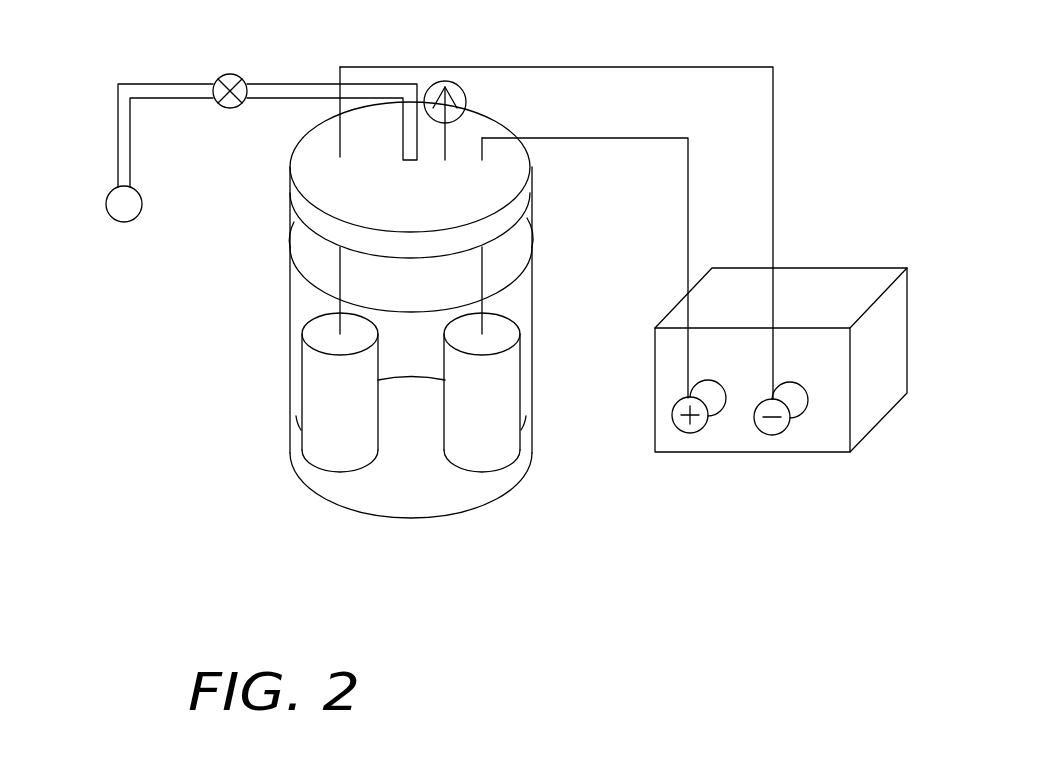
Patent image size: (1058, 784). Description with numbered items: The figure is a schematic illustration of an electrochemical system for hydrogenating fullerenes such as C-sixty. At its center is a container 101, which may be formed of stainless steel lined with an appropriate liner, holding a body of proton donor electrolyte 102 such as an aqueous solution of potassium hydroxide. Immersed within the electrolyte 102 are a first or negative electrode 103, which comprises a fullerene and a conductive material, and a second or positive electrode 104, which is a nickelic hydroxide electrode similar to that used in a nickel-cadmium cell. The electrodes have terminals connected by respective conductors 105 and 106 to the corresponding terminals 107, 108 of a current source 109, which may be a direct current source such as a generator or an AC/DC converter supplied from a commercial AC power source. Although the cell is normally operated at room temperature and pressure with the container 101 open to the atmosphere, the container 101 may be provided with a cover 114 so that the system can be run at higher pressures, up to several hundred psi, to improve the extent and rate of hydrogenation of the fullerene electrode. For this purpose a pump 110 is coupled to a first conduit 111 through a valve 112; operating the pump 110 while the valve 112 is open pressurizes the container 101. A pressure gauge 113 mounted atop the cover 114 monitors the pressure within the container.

The container 101 is at (290, 310).
The proton donor electrolyte 102 is at (400, 463).
The negative electrode 103 is at (340, 448).
The positive electrode 104 is at (485, 448).
The conductor 105 is at (773, 133).
The conductor 106 is at (688, 194).
The terminal 107 is at (692, 435).
The terminal 108 is at (783, 432).
The current source 109 is at (833, 437).
The pump 110 is at (122, 223).
The first conduit 111 is at (127, 83).
The valve 112 is at (230, 73).
The pressure gauge 113 is at (465, 93).
The cover 114 is at (313, 150).